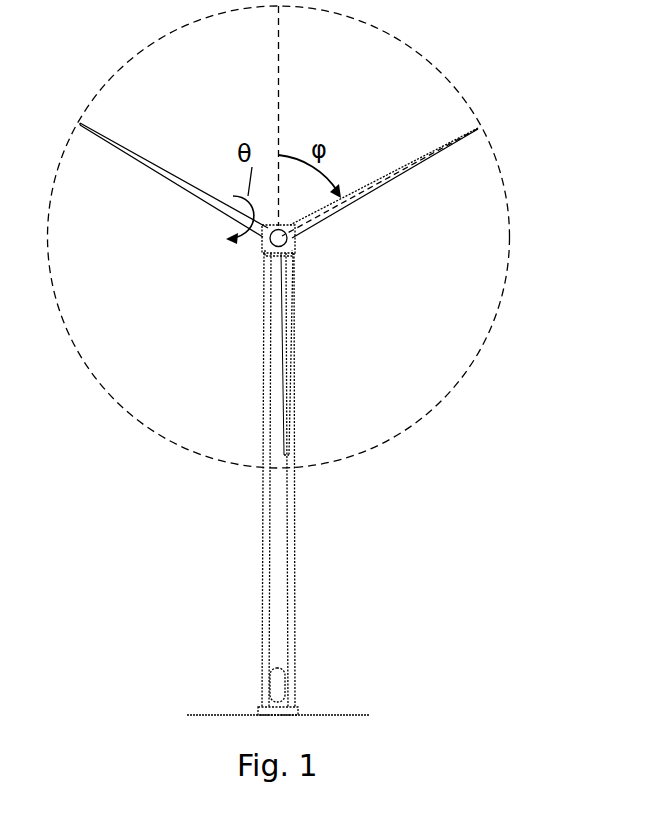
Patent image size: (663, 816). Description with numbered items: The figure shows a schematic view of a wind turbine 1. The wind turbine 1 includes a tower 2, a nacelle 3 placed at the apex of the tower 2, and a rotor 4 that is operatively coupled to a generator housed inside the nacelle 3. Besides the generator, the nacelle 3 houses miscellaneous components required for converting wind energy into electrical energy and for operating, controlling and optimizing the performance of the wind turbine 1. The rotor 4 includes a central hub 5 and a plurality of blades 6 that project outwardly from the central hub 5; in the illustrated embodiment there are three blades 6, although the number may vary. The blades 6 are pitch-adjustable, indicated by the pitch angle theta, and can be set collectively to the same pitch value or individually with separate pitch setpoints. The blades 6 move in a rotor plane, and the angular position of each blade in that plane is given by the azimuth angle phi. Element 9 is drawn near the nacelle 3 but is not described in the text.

The wind turbine 1 is at (534, 85).
The tower 2 is at (284, 507).
The nacelle 3 is at (262, 250).
The rotor 4 is at (305, 282).
The central hub 5 is at (282, 243).
The blades 6 is at (400, 173).
The nacelle 9 is at (272, 256).